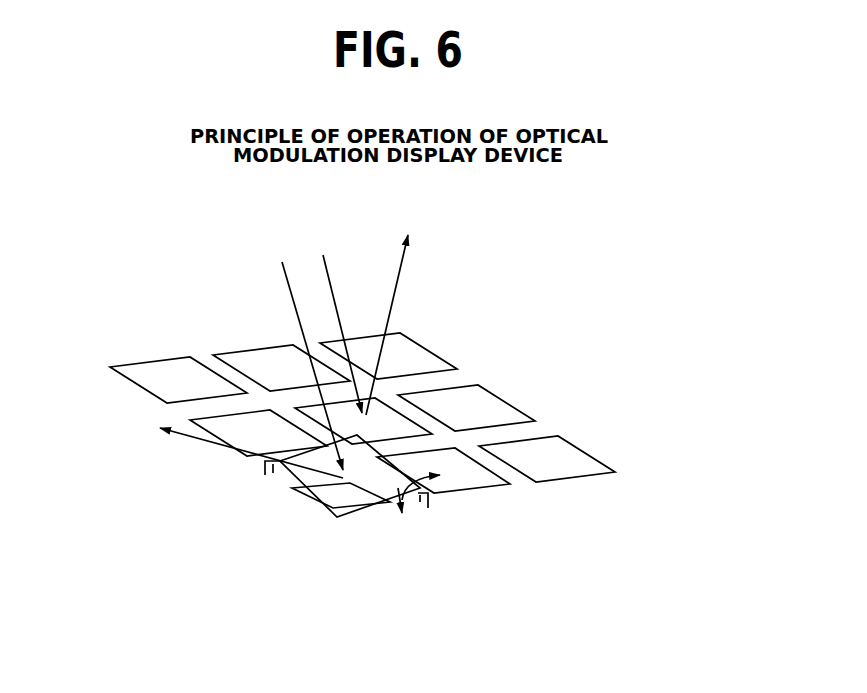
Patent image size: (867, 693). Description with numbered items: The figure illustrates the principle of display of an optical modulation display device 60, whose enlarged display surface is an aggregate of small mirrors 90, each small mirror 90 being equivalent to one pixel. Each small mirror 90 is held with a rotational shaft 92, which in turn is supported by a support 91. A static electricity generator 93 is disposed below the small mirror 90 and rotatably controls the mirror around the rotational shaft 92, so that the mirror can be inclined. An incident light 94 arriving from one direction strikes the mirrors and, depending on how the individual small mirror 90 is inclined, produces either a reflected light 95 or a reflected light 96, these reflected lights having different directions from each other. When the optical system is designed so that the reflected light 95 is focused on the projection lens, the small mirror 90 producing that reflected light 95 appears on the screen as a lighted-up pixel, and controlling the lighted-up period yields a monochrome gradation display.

The optical modulation display device 60 is at (398, 365).
The small mirror 90 is at (400, 415).
The support 91 is at (257, 470).
The rotational shaft 92 is at (277, 472).
The static electricity generator 93 is at (358, 505).
The incident light 94 is at (289, 339).
The reflected light 95 is at (499, 310).
The reflected light 96 is at (210, 448).